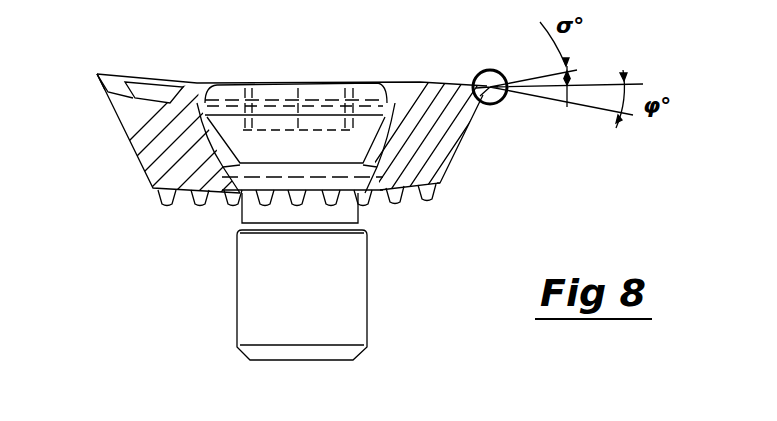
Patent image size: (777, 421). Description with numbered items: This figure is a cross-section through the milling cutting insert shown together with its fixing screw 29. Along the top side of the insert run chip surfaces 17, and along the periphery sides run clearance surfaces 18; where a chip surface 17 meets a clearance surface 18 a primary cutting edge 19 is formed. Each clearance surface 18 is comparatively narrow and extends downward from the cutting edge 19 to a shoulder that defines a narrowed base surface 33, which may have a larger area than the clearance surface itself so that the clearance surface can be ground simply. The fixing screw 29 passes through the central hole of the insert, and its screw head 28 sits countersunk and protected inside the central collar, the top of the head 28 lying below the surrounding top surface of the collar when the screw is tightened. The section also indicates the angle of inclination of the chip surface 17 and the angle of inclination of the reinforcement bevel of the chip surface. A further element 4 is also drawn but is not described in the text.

The teeth / serrations 4 is at (397, 206).
The chip surface 17 is at (112, 82).
The clearance surface 18 is at (477, 122).
The cutting edge 19 is at (105, 93).
The screw head 28 is at (385, 85).
The fixing screw 29 is at (235, 278).
The base surface 33 is at (453, 163).